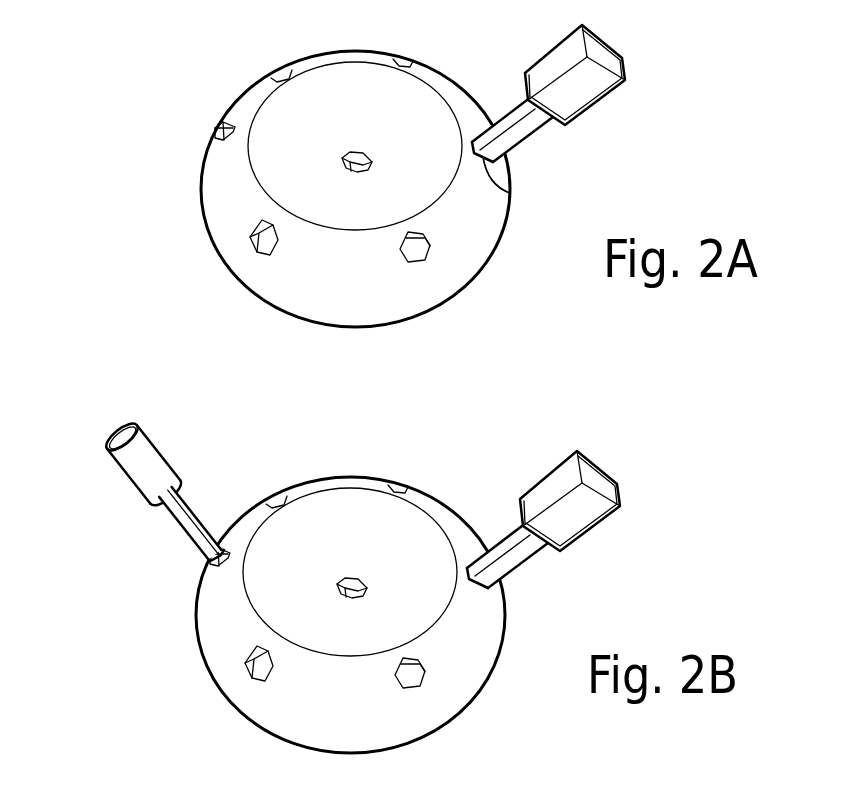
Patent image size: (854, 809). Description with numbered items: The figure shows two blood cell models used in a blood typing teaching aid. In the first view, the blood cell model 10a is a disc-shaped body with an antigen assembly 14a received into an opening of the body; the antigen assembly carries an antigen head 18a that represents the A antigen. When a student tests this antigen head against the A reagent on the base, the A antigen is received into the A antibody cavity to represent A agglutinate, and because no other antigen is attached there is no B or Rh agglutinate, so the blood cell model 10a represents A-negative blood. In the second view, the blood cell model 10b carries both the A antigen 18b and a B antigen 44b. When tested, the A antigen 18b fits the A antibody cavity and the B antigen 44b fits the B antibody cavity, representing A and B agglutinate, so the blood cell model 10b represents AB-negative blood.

In FIG. 2A, the blood cell model 10a is at (223, 193).
In FIG. 2A, the antigen assembly 14a is at (503, 195).
In FIG. 2A, the antigen head 18a is at (603, 80).
In FIG. 2B, the blood cell model 10b is at (217, 687).
In FIG. 2B, the A antigen 18b is at (602, 520).
In FIG. 2B, the B antigen 44b is at (128, 473).